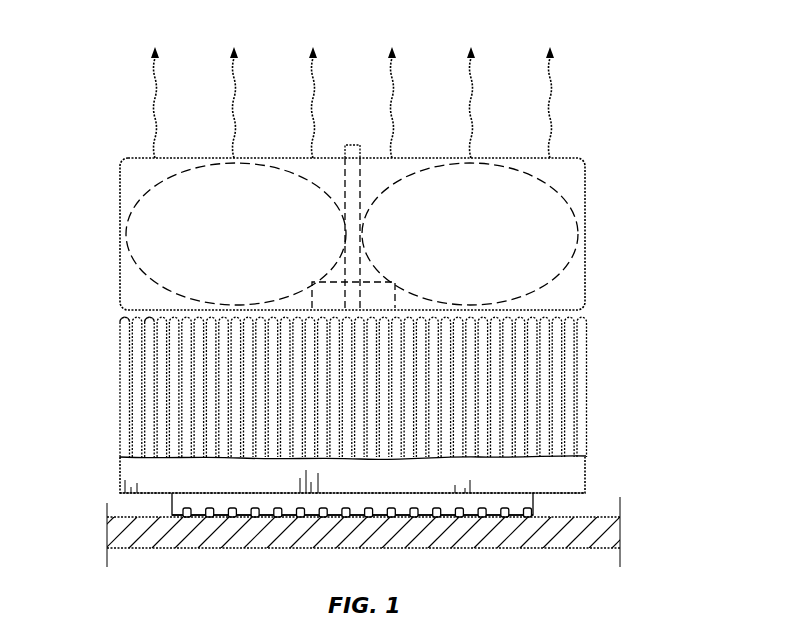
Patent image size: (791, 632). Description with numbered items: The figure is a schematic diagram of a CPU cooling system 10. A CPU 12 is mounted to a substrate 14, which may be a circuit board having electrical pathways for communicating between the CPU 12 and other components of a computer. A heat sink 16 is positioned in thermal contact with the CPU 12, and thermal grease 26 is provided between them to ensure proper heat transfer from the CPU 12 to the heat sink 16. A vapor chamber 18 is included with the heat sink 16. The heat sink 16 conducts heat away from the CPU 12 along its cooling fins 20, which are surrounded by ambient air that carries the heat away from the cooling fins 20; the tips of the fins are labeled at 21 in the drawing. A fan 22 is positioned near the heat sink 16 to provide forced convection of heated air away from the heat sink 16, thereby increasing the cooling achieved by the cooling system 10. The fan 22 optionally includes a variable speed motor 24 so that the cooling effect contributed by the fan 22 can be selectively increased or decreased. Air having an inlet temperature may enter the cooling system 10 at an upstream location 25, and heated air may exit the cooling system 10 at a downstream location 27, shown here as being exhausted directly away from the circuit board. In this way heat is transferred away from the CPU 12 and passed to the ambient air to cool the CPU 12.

The CPU cooling system 10 is at (600, 66).
The CPU 12 is at (540, 503).
The substrate 14 is at (503, 546).
The heat sink 16 is at (354, 390).
The vapor chamber 18 is at (122, 478).
The cooling fins 20 is at (553, 337).
The fin tips 21 is at (150, 317).
The fan 22 is at (585, 178).
The variable speed motor 24 is at (317, 292).
The upstream location 25 is at (170, 505).
The thermal grease 26 is at (585, 458).
The downstream location 27 is at (405, 54).